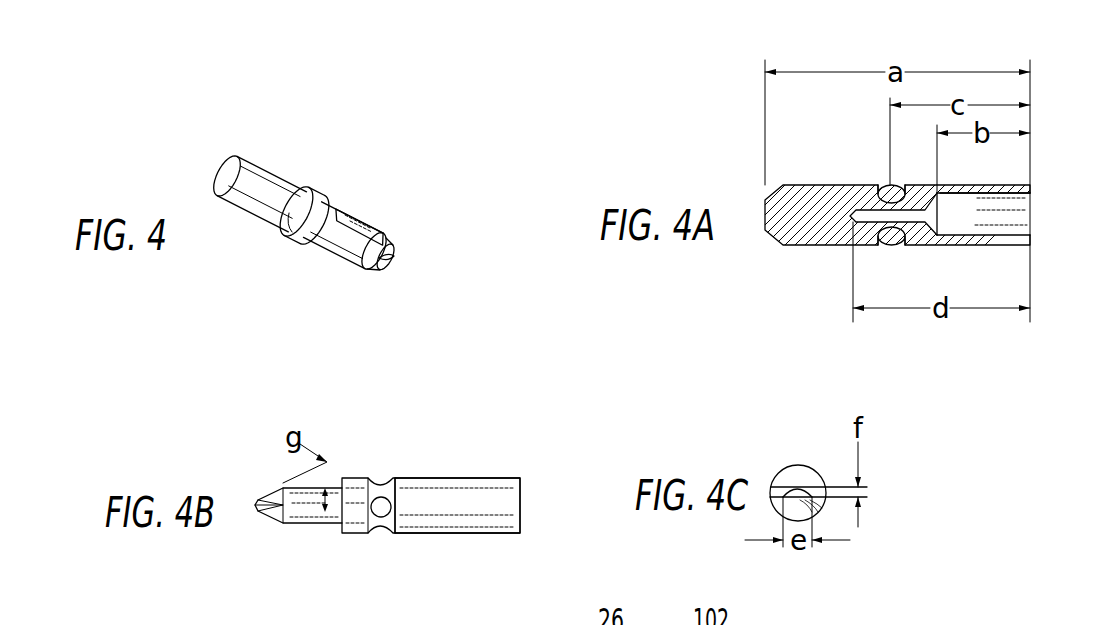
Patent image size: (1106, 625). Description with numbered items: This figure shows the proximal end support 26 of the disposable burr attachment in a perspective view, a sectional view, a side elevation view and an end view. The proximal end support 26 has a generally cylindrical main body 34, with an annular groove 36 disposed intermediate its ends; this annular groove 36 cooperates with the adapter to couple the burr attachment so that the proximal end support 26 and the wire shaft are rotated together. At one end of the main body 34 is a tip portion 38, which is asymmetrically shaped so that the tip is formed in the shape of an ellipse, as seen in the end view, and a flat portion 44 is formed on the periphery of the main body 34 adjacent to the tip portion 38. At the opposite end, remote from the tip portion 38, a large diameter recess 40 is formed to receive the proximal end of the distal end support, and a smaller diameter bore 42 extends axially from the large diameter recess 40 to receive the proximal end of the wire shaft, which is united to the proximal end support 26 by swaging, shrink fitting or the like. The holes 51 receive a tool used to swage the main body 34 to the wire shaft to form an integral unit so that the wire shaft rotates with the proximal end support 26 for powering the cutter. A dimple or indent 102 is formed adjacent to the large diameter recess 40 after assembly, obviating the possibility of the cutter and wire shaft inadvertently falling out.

In FIG. 4B, the proximal end support 26 is at (440, 478).
In FIG. 4, the main body 34 is at (268, 168).
In FIG. 4A, the main body 34 is at (833, 247).
In FIG. 4B, the main body 34 is at (490, 535).
In FIG. 4, the annular groove 36 is at (323, 192).
In FIG. 4A, the annular groove 36 is at (895, 243).
In FIG. 4B, the annular groove 36 is at (373, 478).
In FIG. 4, the tip portion 38 is at (402, 252).
In FIG. 4B, the tip portion 38 is at (265, 522).
In FIG. 4C, the tip portion 38 is at (797, 465).
In FIG. 4A, the large diameter recess 40 is at (995, 229).
In FIG. 4A, the smaller diameter bore 42 is at (902, 186).
In FIG. 4, the flat portion 44 is at (377, 220).
In FIG. 4B, the holes 51 is at (383, 512).
In FIG. 4A, the dimple or indent 102 is at (963, 190).